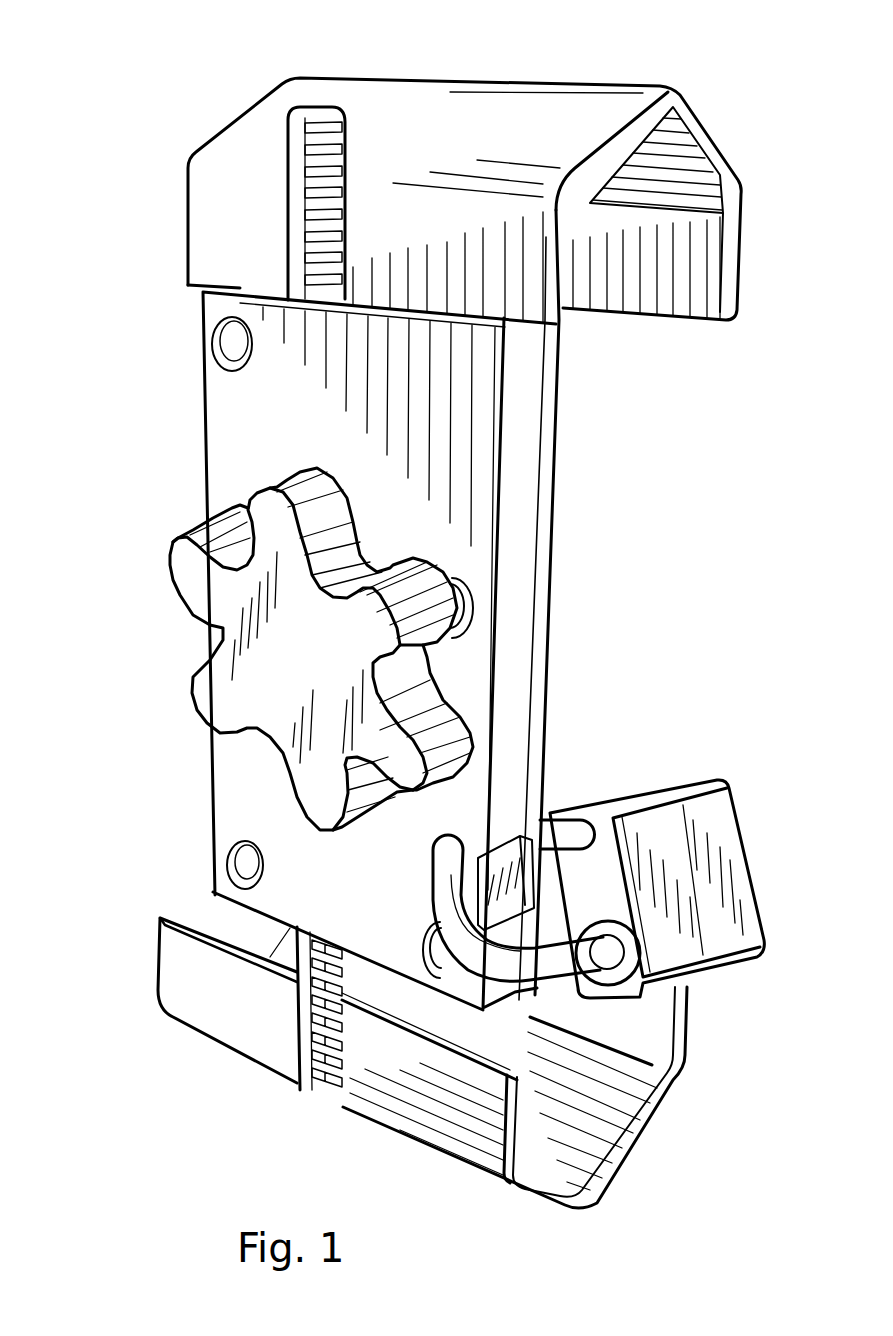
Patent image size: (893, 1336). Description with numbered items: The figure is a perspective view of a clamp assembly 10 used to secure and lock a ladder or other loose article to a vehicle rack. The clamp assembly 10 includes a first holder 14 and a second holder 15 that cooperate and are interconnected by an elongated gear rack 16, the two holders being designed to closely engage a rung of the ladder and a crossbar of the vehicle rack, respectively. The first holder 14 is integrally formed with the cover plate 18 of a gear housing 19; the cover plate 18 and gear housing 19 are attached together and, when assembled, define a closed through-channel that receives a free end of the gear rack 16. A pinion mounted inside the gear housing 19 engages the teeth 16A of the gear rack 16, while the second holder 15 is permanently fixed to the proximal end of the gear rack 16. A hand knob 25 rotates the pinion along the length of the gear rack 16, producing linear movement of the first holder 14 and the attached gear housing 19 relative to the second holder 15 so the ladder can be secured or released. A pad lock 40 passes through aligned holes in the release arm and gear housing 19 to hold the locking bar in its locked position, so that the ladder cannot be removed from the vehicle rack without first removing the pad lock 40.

The clamp assembly 10 is at (72, 98).
The first holder 14 is at (432, 115).
The second holder 15 is at (225, 1008).
The gear rack 16 is at (293, 173).
The teeth 16A is at (345, 140).
The cover plate 18 is at (557, 515).
The gear housing 19 is at (233, 393).
The hand knob 25 is at (257, 613).
The pad lock 40 is at (657, 803).